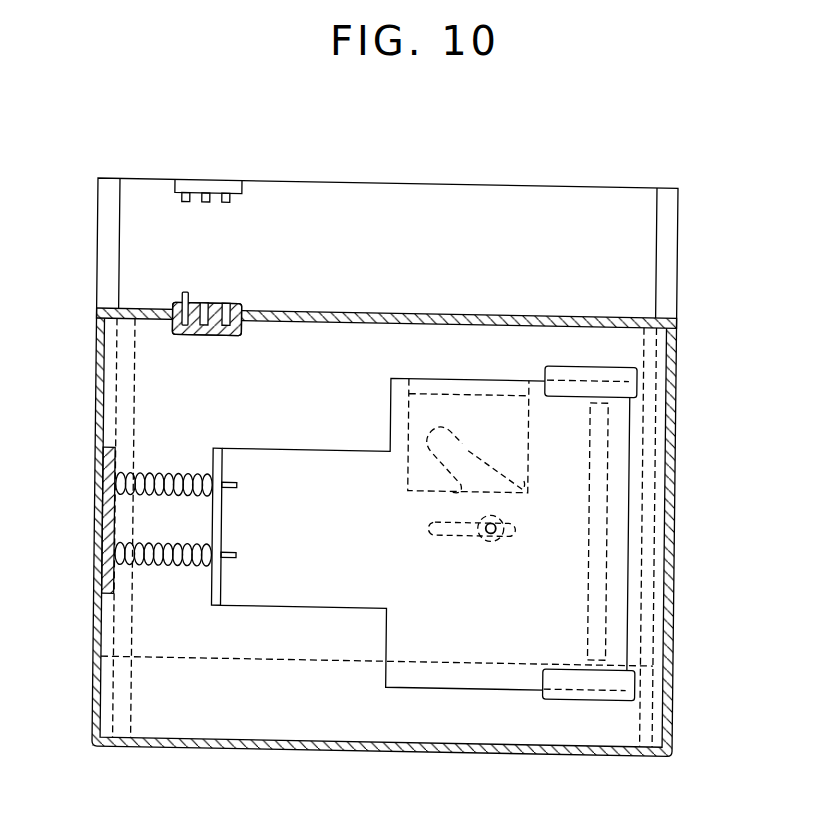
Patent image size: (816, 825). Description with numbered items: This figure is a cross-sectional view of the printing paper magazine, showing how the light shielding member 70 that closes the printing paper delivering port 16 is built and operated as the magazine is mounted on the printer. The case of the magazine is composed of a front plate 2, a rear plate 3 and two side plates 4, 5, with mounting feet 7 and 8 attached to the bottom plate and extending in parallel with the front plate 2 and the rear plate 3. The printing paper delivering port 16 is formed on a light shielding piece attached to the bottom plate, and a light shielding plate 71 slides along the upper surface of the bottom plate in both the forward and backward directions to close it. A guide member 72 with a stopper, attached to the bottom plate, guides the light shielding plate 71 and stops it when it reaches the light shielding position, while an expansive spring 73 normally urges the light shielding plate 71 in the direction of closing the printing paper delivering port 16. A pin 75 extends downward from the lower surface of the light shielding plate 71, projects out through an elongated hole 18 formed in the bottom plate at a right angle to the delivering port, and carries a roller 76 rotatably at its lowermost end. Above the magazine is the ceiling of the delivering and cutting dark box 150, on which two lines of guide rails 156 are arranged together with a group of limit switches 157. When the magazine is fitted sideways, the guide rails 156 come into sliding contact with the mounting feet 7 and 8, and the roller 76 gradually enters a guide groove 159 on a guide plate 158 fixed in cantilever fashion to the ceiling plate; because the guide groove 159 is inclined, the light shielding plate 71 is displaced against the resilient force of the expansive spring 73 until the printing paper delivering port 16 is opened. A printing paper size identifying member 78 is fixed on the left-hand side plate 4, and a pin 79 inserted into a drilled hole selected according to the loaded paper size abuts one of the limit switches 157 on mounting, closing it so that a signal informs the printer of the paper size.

The delivering and cutting dark box 150 is at (608, 178).
The guide rails 156 is at (106, 258).
The limit switches 157 is at (213, 203).
The pin 79 is at (188, 286).
The printing paper size identifying member 78 is at (239, 298).
The side plate 4 is at (404, 307).
The mounting foot 7 is at (119, 358).
The mounting foot 8 is at (680, 340).
The front plate 2 is at (99, 497).
The expansive spring 73 is at (151, 474).
The light shielding plate 71 is at (306, 446).
The light shielding member 70 is at (358, 605).
The guide member 72 is at (589, 371).
The printing paper delivering port 16 is at (608, 459).
The rear plate 3 is at (679, 523).
The guide groove 159 is at (463, 421).
The guide plate 158 is at (508, 403).
The elongated hole 18 is at (449, 531).
The pin 75 is at (492, 535).
The roller 76 is at (509, 536).
The side plate 5 is at (359, 748).